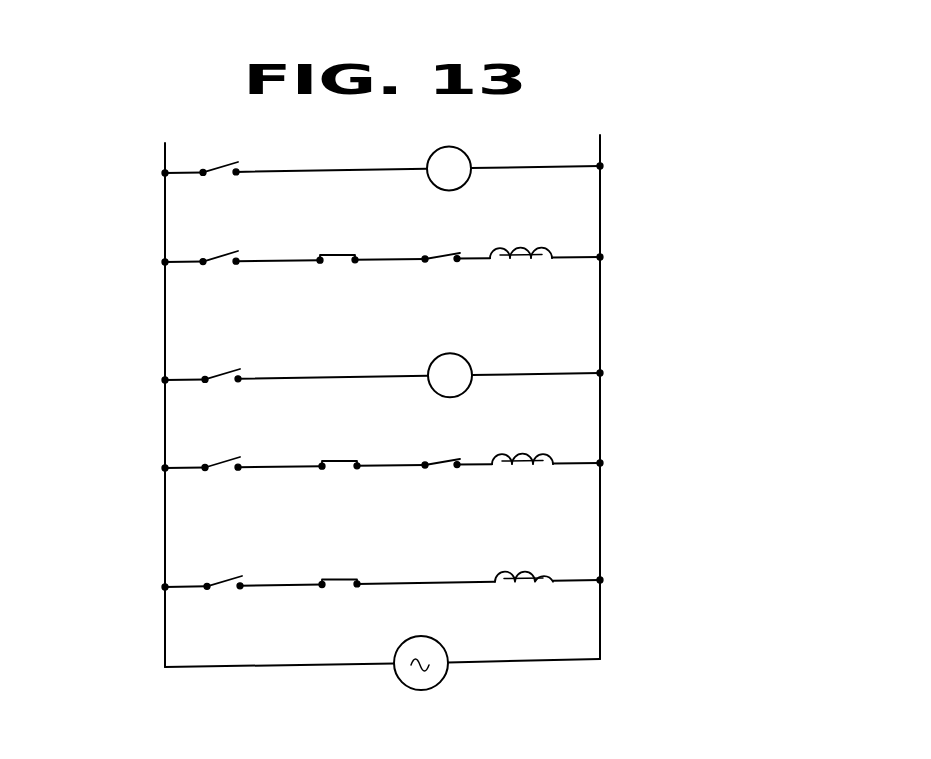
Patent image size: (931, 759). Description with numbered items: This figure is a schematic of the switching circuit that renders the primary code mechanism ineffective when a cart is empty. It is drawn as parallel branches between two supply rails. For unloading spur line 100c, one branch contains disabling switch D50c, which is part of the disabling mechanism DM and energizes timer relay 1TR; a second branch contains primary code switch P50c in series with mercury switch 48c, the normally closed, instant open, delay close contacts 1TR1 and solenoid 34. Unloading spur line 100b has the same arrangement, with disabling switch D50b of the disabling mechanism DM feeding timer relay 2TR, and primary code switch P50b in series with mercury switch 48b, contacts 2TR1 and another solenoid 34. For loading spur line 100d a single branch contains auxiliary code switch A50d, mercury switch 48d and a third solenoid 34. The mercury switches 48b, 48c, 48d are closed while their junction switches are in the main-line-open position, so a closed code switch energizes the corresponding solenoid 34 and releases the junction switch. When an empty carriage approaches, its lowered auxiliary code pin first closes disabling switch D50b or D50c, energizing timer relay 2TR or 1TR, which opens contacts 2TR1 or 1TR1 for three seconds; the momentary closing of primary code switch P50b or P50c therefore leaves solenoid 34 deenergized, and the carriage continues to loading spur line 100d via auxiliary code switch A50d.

The solenoid 34 is at (505, 257).
The mercury switch 48c is at (337, 255).
The mercury switch 48b is at (338, 461).
The mercury switch 48d is at (338, 579).
The unloading spur line 100c is at (628, 157).
The unloading spur line 100b is at (628, 363).
The loading spur line 100d is at (693, 581).
The disabling switch D50c is at (238, 192).
The primary code switch P50c is at (238, 283).
The disabling switch D50b is at (233, 347).
The primary code switch P50b is at (240, 489).
The auxiliary code switch A50d is at (241, 606).
The timer relay 1TR is at (463, 177).
The timer relay 2TR is at (464, 384).
The timer relay switch contacts 1TR1 is at (442, 287).
The timer relay switch contacts 2TR1 is at (445, 493).
The disabling mechanism DM is at (152, 174).